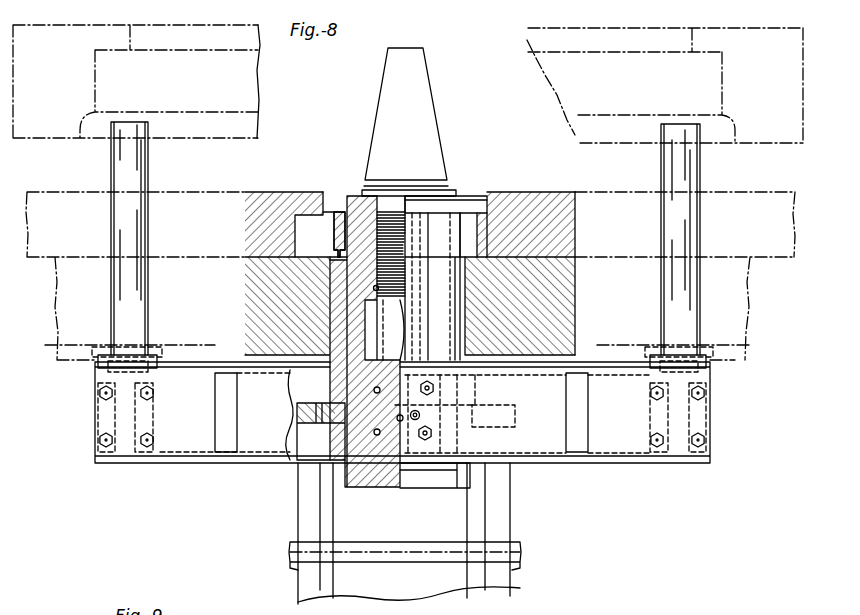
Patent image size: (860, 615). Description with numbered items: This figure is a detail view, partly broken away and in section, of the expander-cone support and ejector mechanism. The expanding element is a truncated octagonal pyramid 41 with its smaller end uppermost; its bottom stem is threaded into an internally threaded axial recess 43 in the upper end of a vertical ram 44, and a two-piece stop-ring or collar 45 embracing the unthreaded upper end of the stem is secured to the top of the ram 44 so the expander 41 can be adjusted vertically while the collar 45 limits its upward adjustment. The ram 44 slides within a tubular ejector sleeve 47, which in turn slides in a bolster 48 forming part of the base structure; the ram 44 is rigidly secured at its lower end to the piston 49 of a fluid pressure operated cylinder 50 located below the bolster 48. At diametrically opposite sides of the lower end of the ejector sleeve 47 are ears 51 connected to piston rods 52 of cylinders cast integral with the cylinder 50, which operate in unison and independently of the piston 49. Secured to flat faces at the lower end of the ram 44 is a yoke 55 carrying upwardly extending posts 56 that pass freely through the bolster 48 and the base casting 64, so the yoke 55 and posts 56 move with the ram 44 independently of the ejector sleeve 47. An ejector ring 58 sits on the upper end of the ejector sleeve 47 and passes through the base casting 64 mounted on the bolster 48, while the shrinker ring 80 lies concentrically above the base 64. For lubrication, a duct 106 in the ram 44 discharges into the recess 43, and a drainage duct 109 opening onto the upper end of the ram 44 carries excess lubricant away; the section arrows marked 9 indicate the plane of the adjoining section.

The shrinker ring 80 is at (73, 32).
The truncated octagonal pyramid expander 41 is at (433, 100).
The vertical ram 44 is at (350, 200).
The two-piece stop-ring or collar 45 is at (450, 193).
The base casting 64 is at (515, 195).
The ejector ring 58 is at (334, 222).
The posts or pins 56 is at (118, 165).
The internally threaded axial recess 43 is at (376, 288).
The drainage duct 109 is at (418, 323).
The bolster 48 is at (497, 357).
The tubular ejector sleeve 47 is at (340, 375).
The ears 51 is at (290, 420).
The yoke 55 is at (607, 452).
The piston rods 52 is at (297, 503).
The piston 49 is at (333, 512).
The fluid pressure operated cylinder 50 is at (446, 542).
The duct 106 is at (403, 488).
The section line 9- 9 is at (36, 362).